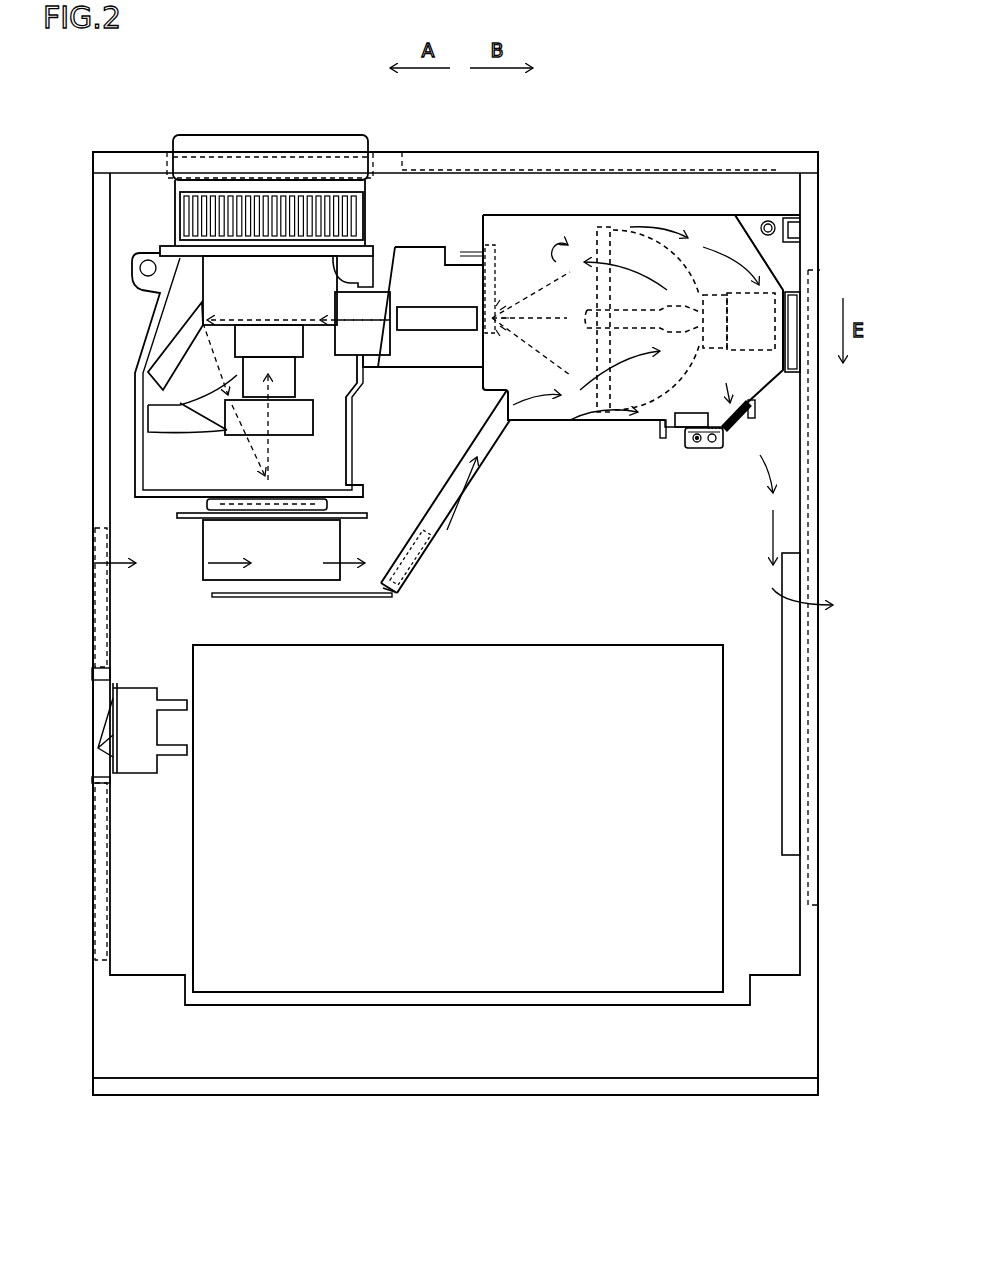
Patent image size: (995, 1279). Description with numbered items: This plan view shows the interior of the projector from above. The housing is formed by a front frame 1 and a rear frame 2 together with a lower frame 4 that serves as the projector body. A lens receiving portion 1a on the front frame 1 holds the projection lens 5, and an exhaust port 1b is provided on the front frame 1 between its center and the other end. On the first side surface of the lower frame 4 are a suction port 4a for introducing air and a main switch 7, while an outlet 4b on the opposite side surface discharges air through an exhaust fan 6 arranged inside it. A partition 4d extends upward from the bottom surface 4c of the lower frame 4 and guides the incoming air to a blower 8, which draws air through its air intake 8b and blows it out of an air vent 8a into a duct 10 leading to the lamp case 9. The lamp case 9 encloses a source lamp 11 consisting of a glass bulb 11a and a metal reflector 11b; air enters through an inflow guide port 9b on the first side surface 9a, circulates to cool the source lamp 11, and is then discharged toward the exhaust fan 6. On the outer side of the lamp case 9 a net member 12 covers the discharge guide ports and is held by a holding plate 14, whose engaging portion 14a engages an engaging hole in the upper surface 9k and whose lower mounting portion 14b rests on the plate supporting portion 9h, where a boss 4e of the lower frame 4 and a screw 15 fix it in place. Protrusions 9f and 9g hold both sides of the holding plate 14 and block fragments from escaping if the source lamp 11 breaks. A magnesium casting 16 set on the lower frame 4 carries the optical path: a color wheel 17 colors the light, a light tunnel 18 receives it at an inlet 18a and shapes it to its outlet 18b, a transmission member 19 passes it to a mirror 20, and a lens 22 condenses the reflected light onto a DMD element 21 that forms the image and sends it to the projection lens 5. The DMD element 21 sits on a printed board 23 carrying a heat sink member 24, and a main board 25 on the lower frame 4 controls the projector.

The front frame 1 is at (135, 163).
The lens receiving portion 1a is at (175, 165).
The exhaust port 1b is at (590, 167).
The rear frame 2 is at (770, 1038).
The lower frame 4 is at (105, 478).
The suction port 4a is at (95, 657).
The outlet 4b is at (810, 690).
The bottom surface 4c is at (767, 933).
The partition 4d is at (252, 597).
The boss 4e is at (699, 446).
The projection lens 5 is at (270, 157).
The exhaust fan 6 is at (790, 750).
The main switch 7 is at (130, 733).
The blower 8 is at (438, 515).
The air vent 8a is at (430, 523).
The air intake 8b is at (392, 590).
The lamp case 9 is at (677, 291).
The first side surface 9a is at (575, 423).
The inflow guide port 9b is at (505, 422).
The protrusion 9f is at (660, 432).
The protrusion 9g is at (757, 410).
The plate supporting portion 9h is at (697, 442).
The upper surface 9k is at (717, 225).
The duct 10 is at (438, 512).
The source lamp 11 is at (680, 241).
The glass bulb 11a is at (615, 232).
The metal reflector 11b is at (718, 218).
The net member 12 is at (760, 380).
The holding plate 14 is at (762, 423).
The engaging portion 14a is at (683, 413).
The lower mounting portion 14b is at (709, 442).
The screw 15 is at (695, 487).
The casting 16 is at (155, 328).
The color wheel 17 is at (491, 320).
The light tunnel 18 is at (406, 300).
The inlet 18a is at (478, 333).
The outlet 18b is at (390, 357).
The transmission member 19 is at (375, 302).
The mirror 20 is at (173, 355).
The DMD element 21 is at (280, 515).
The lens 22 is at (192, 413).
The printed board 23 is at (202, 515).
The heat sink member 24 is at (235, 578).
The main board 25 is at (513, 685).